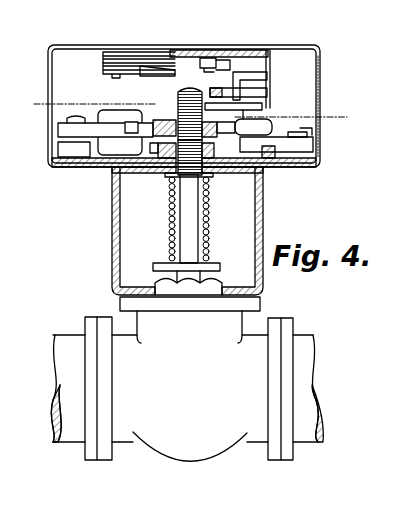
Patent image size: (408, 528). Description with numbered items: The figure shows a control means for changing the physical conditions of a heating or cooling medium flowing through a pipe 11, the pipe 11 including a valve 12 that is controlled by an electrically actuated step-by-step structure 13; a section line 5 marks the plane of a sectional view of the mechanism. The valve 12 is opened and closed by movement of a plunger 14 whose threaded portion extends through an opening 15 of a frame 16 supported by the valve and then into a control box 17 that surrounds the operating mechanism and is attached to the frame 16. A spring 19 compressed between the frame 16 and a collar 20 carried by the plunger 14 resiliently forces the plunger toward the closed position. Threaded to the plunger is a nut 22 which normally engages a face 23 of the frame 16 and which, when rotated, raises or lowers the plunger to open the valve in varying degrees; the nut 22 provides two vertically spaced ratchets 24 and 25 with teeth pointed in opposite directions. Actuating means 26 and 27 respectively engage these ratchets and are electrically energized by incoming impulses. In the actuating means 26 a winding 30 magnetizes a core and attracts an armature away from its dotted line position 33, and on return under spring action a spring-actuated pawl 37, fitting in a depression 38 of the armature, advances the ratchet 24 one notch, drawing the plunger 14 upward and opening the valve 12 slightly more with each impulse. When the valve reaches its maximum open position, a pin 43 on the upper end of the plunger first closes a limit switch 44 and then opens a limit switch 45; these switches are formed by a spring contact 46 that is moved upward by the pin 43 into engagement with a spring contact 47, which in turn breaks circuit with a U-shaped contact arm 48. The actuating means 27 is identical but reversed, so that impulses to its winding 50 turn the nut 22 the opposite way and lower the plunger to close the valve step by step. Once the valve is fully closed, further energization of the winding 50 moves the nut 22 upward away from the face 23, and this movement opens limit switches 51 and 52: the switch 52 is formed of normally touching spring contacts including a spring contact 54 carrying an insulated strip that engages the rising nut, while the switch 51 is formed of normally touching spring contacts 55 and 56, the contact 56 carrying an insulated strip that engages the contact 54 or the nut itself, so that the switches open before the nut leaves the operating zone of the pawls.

The section line 5- 5 is at (34, 126).
The pipe 11 is at (312, 351).
The valve 12 is at (194, 440).
The step-by-step structure 13 is at (327, 54).
The plunger 14 is at (188, 240).
The opening 15 is at (201, 176).
The frame 16 is at (268, 232).
The control box 17 is at (322, 94).
The spring 19 is at (208, 244).
The collar 20 is at (160, 264).
The nut 22 is at (162, 154).
The face 23 is at (164, 178).
The ratchet 24 is at (130, 168).
The ratchet 25 is at (107, 158).
The actuating means 26 is at (268, 160).
The actuating means 27 is at (90, 128).
The winding 30 is at (295, 126).
The dotted line position 33 is at (253, 122).
The spring-actuated pawl 37 is at (233, 148).
The depression 38 is at (262, 198).
The pin 43 is at (180, 92).
The limit switch 44 is at (172, 72).
The limit switch 45 is at (225, 62).
The spring contact 46 is at (140, 76).
The spring contact 47 is at (148, 66).
The U-shaped contact arm 48 is at (208, 57).
The winding 50 is at (97, 152).
The limit switch 51 is at (230, 88).
The limit switch 52 is at (243, 107).
The spring contact 54 is at (238, 100).
The spring contact 55 is at (243, 98).
The spring contact 56 is at (235, 84).